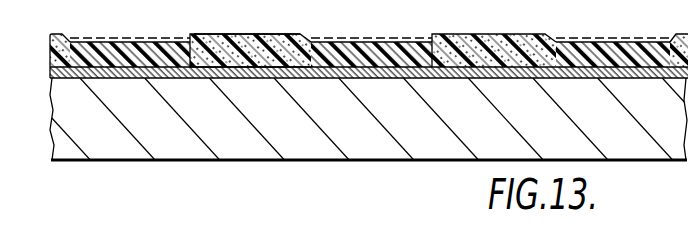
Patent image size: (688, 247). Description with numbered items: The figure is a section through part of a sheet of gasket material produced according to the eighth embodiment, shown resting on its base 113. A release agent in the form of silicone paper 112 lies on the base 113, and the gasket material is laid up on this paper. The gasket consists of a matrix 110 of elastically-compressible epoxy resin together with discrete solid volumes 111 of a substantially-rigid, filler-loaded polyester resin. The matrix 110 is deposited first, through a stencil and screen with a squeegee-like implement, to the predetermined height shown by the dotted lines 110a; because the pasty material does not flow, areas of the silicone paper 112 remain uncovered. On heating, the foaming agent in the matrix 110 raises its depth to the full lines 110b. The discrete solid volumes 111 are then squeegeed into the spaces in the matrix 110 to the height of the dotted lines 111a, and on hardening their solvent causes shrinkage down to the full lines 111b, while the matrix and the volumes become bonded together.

The matrix 110 is at (215, 33).
The dotted lines 110a is at (290, 114).
The full lines 110b is at (315, 33).
The discrete solid volumes 111 is at (403, 50).
The dotted lines 111a is at (451, 26).
The full lines 111b is at (405, 24).
The silicone paper 112 is at (578, 70).
The base 113 is at (367, 137).